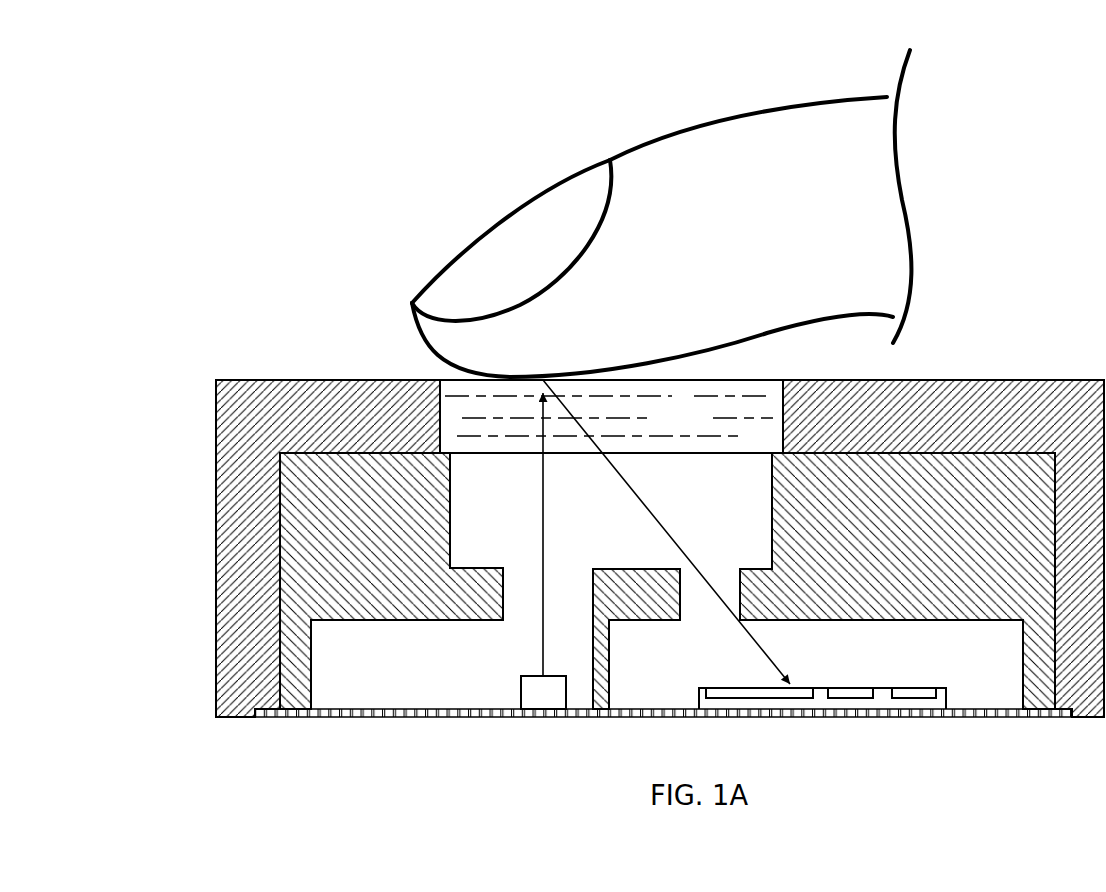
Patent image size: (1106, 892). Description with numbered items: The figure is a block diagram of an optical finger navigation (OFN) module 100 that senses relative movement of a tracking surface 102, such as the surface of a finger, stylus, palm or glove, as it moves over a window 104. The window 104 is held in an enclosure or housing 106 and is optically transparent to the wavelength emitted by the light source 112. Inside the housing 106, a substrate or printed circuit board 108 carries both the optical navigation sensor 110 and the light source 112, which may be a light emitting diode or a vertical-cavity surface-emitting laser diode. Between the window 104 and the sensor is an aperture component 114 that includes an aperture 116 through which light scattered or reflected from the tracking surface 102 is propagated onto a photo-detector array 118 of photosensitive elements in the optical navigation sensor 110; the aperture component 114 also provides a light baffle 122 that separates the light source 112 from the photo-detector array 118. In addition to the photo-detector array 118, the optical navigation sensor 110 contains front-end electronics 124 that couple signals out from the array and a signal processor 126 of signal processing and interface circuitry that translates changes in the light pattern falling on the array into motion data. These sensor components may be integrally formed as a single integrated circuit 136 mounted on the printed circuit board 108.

The optical finger navigation module 100 is at (261, 316).
The tracking surface 102 is at (566, 370).
The window 104 is at (700, 426).
The housing 106 is at (339, 422).
The printed circuit board 108 is at (339, 708).
The optical navigation sensor 110 is at (815, 676).
The light source 112 is at (560, 704).
The aperture component 114 is at (892, 536).
The aperture 116 is at (697, 611).
The photo-detector array 118 is at (725, 689).
The light baffle 122 is at (593, 650).
The front-end electronics 124 is at (856, 688).
The signal processor 126 is at (912, 688).
The integrated circuit 136 is at (949, 697).